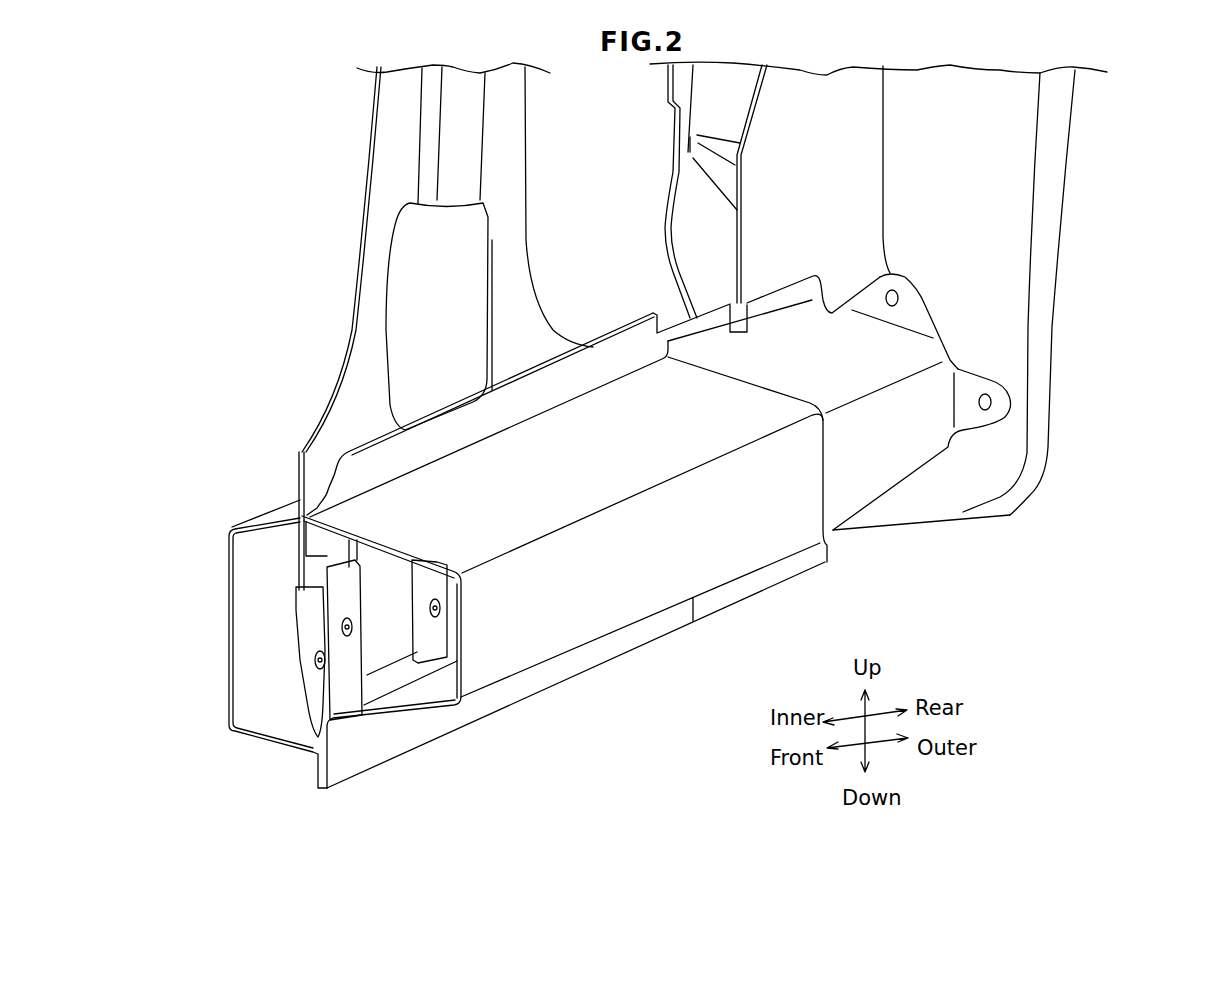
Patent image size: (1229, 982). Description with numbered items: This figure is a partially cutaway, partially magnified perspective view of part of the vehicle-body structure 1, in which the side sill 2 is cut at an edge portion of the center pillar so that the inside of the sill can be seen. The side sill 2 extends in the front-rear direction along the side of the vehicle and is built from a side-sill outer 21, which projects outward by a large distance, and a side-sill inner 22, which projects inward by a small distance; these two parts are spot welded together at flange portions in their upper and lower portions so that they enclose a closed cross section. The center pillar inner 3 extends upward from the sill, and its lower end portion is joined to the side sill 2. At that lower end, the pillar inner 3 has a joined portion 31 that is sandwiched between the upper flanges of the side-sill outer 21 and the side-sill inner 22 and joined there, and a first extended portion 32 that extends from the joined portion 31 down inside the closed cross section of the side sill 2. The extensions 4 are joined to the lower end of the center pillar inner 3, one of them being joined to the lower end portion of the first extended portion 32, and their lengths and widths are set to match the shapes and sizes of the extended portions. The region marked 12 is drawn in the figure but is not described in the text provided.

The vehicle-body structure 1 is at (1128, 178).
The side sill 2 is at (513, 655).
The side-sill outer 21 is at (480, 652).
The side-sill inner 22 is at (228, 706).
The center pillar inner 3 is at (353, 308).
The joined portion 31 is at (318, 482).
The first extended portion 32 is at (298, 571).
The extension 4 is at (298, 643).
The rear wheel house 12 is at (1054, 324).